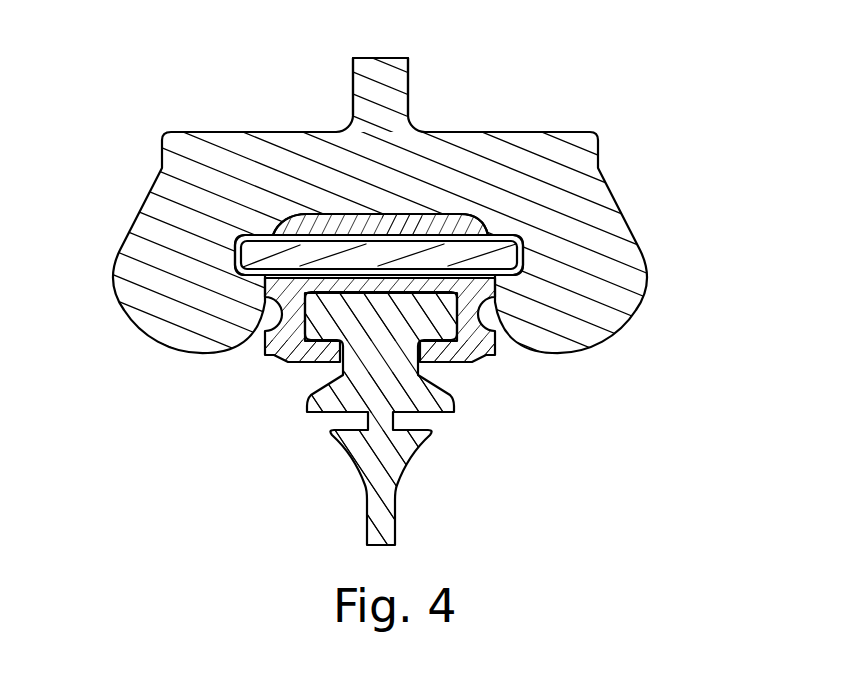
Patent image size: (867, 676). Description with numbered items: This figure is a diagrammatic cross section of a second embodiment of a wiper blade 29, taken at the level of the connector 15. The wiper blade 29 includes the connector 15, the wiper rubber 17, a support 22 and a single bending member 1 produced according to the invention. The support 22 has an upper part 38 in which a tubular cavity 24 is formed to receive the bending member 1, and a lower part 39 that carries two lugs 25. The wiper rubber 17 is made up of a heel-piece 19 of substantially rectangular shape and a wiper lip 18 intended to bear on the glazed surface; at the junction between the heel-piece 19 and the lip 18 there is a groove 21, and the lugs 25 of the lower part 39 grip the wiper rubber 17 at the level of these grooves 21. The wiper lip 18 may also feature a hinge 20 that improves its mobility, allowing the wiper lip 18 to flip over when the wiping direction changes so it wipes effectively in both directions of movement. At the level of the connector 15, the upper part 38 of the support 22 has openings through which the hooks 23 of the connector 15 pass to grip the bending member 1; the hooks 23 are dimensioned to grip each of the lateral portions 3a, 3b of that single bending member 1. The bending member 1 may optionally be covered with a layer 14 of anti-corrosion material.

The bending member 1 is at (257, 269).
The wiper blade 29 is at (180, 100).
The connector 15 is at (147, 253).
The tubular cavity 24 is at (383, 213).
The hooks 23 is at (193, 333).
The layer of anti-corrosion material 14 is at (525, 239).
The lateral portion 3a is at (267, 257).
The lateral portion 3b is at (498, 250).
The support 22 is at (455, 228).
The upper part 38 is at (404, 212).
The lower part 39 is at (478, 290).
The lugs 25 is at (277, 340).
The heel-piece 19 is at (343, 307).
The hinge 20 is at (426, 421).
The groove 21 is at (324, 374).
The wiper rubber 17 is at (352, 510).
The wiper lip 18 is at (396, 507).